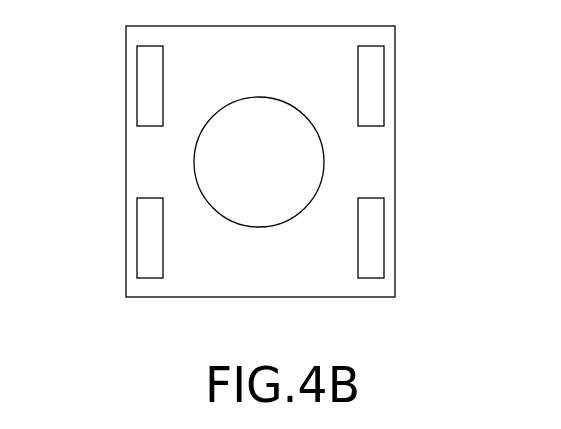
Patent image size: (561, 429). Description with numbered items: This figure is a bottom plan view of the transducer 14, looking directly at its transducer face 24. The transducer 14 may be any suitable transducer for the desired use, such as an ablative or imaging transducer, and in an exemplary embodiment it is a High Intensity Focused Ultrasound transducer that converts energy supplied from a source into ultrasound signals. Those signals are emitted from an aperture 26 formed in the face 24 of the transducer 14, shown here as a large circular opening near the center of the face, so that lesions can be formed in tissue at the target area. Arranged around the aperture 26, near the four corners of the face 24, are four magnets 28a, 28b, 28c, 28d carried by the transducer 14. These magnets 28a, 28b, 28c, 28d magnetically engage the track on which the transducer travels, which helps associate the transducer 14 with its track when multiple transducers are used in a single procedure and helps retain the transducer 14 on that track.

The transducer 14 is at (395, 128).
The transducer face 24 is at (269, 282).
The aperture 26 is at (268, 166).
The magnet 28a is at (137, 85).
The magnet 28b is at (137, 252).
The magnet 28c is at (384, 84).
The magnet 28d is at (384, 252).